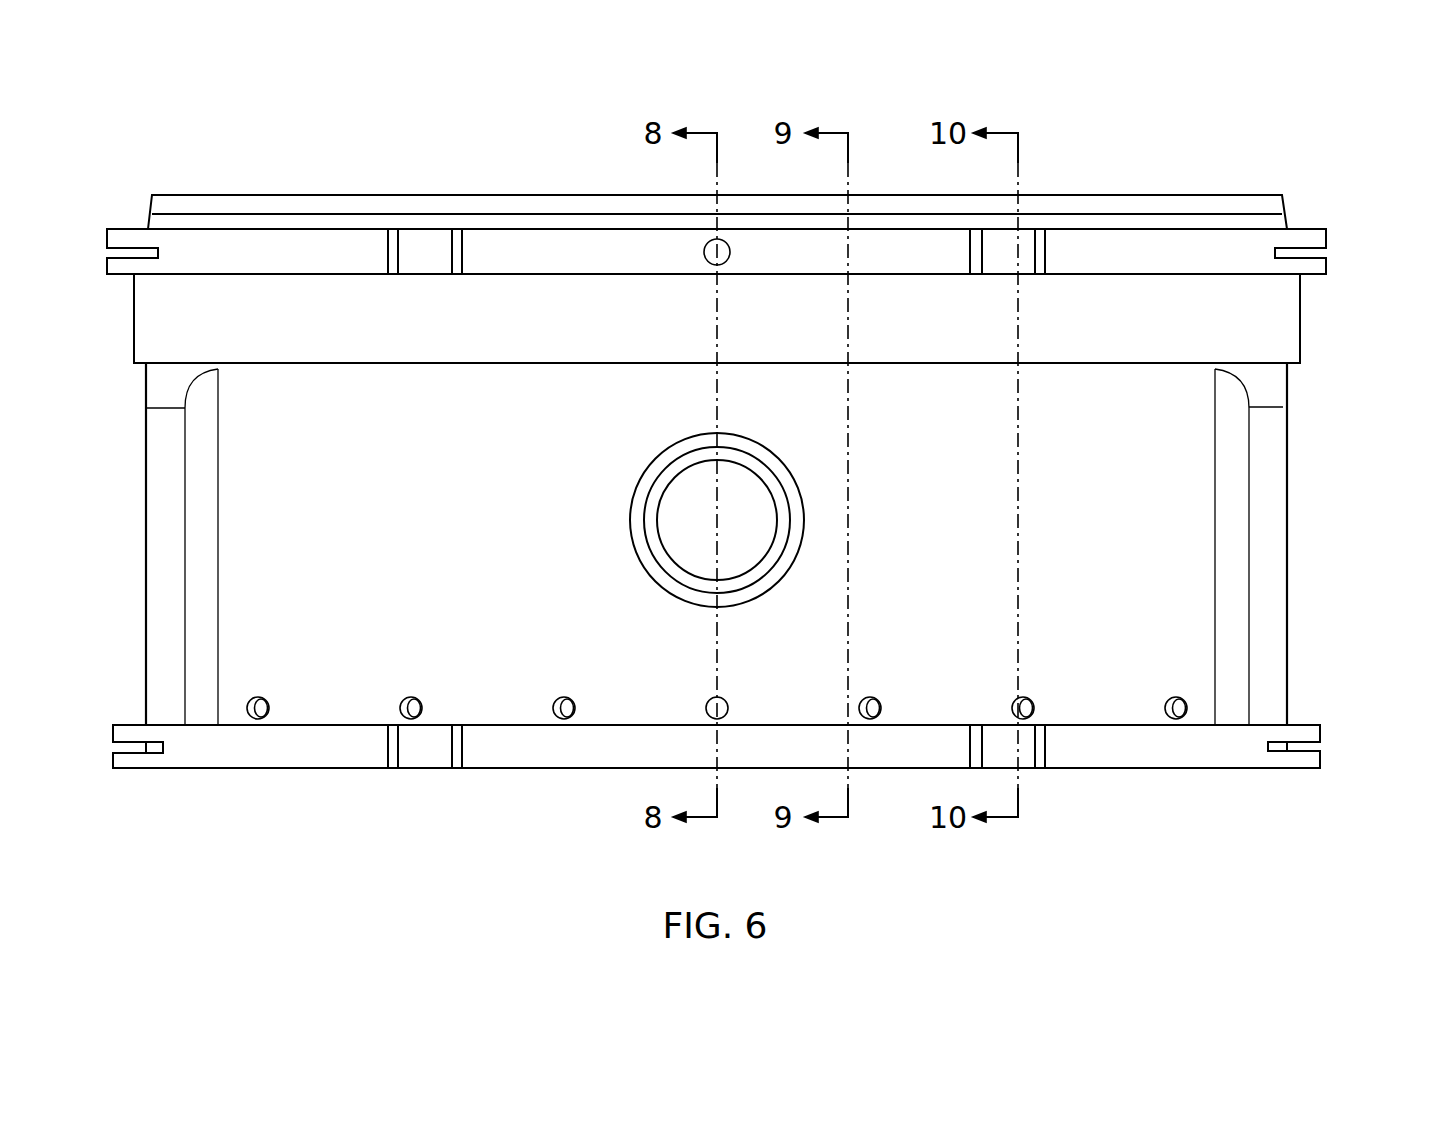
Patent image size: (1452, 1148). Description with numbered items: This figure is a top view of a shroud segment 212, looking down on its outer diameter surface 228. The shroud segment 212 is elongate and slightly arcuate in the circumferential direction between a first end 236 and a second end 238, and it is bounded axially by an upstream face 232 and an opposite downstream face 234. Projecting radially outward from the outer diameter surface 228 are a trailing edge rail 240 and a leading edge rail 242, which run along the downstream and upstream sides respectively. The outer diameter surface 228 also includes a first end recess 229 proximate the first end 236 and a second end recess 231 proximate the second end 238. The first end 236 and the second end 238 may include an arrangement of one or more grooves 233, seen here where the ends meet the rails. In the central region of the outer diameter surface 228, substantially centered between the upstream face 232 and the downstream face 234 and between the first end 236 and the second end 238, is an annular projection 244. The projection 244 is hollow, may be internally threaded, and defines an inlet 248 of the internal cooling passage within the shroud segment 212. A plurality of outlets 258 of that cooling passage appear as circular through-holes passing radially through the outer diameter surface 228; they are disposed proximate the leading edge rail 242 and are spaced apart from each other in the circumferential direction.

The shroud segment 212 is at (698, 211).
The downstream face 234 is at (1160, 195).
The trailing edge rail 240 is at (792, 263).
The leading edge rail 242 is at (765, 732).
The upstream face 232 is at (1140, 768).
The grooves 233 is at (1330, 742).
The first end 236 is at (146, 502).
The first end recess 229 is at (153, 622).
The second end 238 is at (1287, 510).
The second end recess 231 is at (1278, 595).
The outer diameter surface 228 is at (955, 517).
The projection 244 is at (752, 438).
The inlet 248 is at (667, 508).
The outlets 258 is at (258, 697).